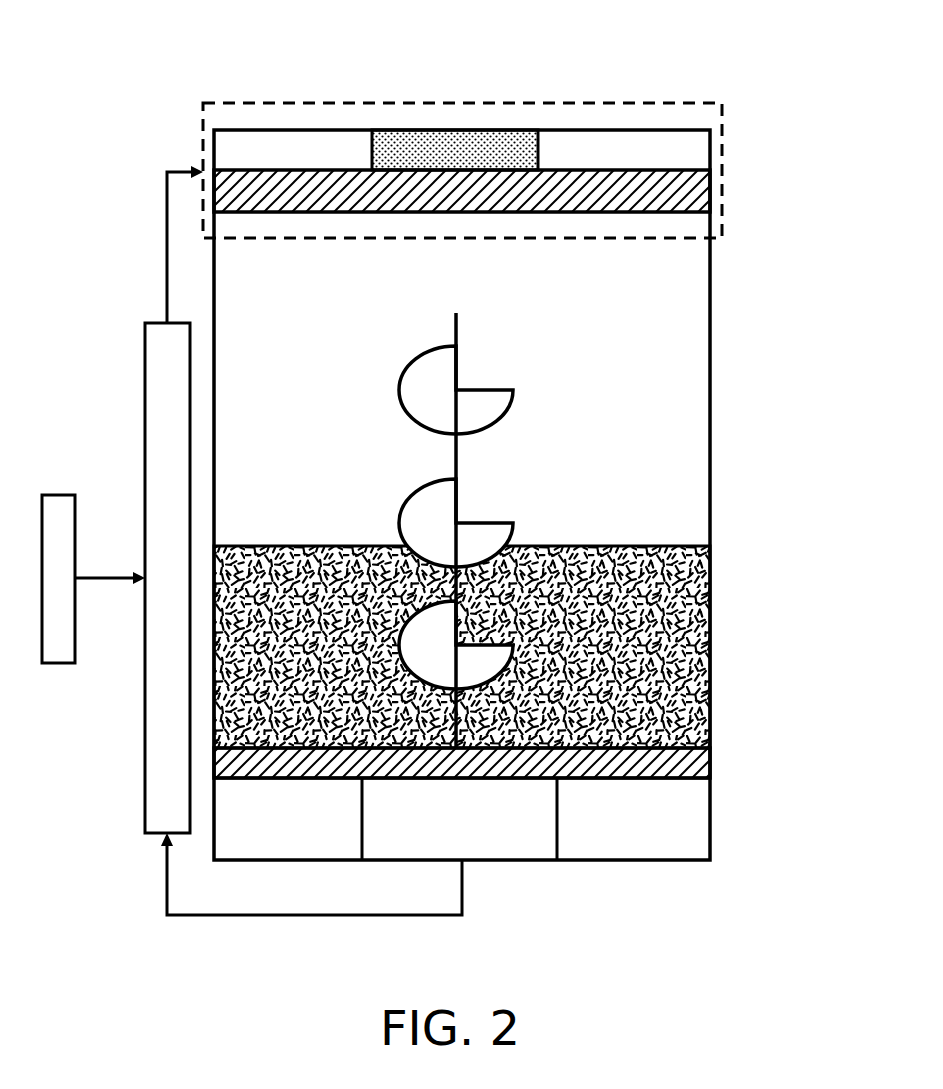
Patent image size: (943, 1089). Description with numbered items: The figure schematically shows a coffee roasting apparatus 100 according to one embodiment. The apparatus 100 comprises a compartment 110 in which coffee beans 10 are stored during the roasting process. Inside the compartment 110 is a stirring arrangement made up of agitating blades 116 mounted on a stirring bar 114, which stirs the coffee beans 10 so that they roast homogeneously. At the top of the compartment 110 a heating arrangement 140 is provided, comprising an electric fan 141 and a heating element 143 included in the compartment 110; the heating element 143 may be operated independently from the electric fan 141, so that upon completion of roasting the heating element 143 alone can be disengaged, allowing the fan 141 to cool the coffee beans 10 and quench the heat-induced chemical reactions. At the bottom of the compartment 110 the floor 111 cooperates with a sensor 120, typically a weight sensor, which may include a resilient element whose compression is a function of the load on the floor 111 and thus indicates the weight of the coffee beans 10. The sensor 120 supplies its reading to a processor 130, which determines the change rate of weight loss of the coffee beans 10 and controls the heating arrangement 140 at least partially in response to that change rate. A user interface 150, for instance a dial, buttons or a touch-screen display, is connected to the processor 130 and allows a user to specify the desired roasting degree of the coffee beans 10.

The apparatus 100 is at (139, 78).
The compartment 110 is at (686, 494).
The coffee beans 10 is at (690, 652).
The agitating blades 116 is at (478, 408).
The stirring bar 114 is at (456, 326).
The heating element 143 is at (291, 182).
The electric fan 141 is at (463, 150).
The heating arrangement 140 is at (722, 112).
The floor 111 is at (690, 764).
The sensor 120 is at (508, 822).
The processor 130 is at (162, 355).
The user interface 150 is at (60, 505).